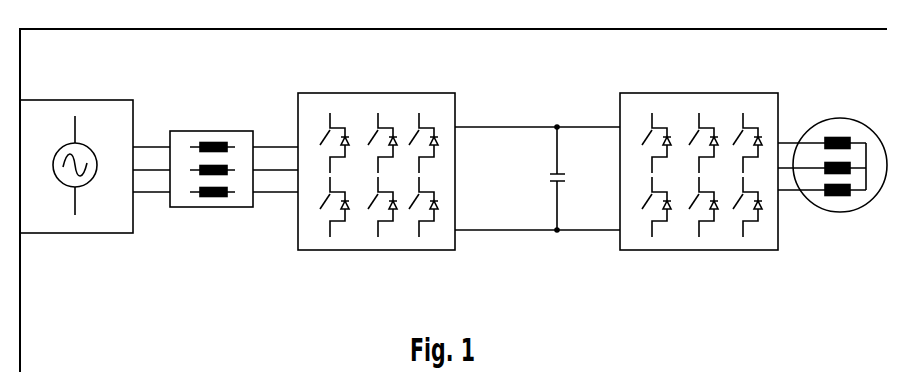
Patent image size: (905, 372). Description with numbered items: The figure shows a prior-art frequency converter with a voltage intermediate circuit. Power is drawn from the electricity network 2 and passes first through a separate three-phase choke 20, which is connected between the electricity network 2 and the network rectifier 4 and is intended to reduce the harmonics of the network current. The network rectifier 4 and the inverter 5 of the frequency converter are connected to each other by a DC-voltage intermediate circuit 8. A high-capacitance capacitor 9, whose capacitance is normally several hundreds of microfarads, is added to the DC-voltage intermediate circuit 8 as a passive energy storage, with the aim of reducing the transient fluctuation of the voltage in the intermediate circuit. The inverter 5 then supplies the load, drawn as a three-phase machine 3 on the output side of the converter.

The electricity network 2 is at (67, 100).
The three-phase choke 20 is at (205, 131).
The network rectifier 4 is at (366, 93).
The DC-voltage intermediate circuit 8 is at (510, 127).
The high-capacitance capacitor 9 is at (560, 168).
The inverter 5 is at (690, 93).
The motor / load 3 is at (830, 119).